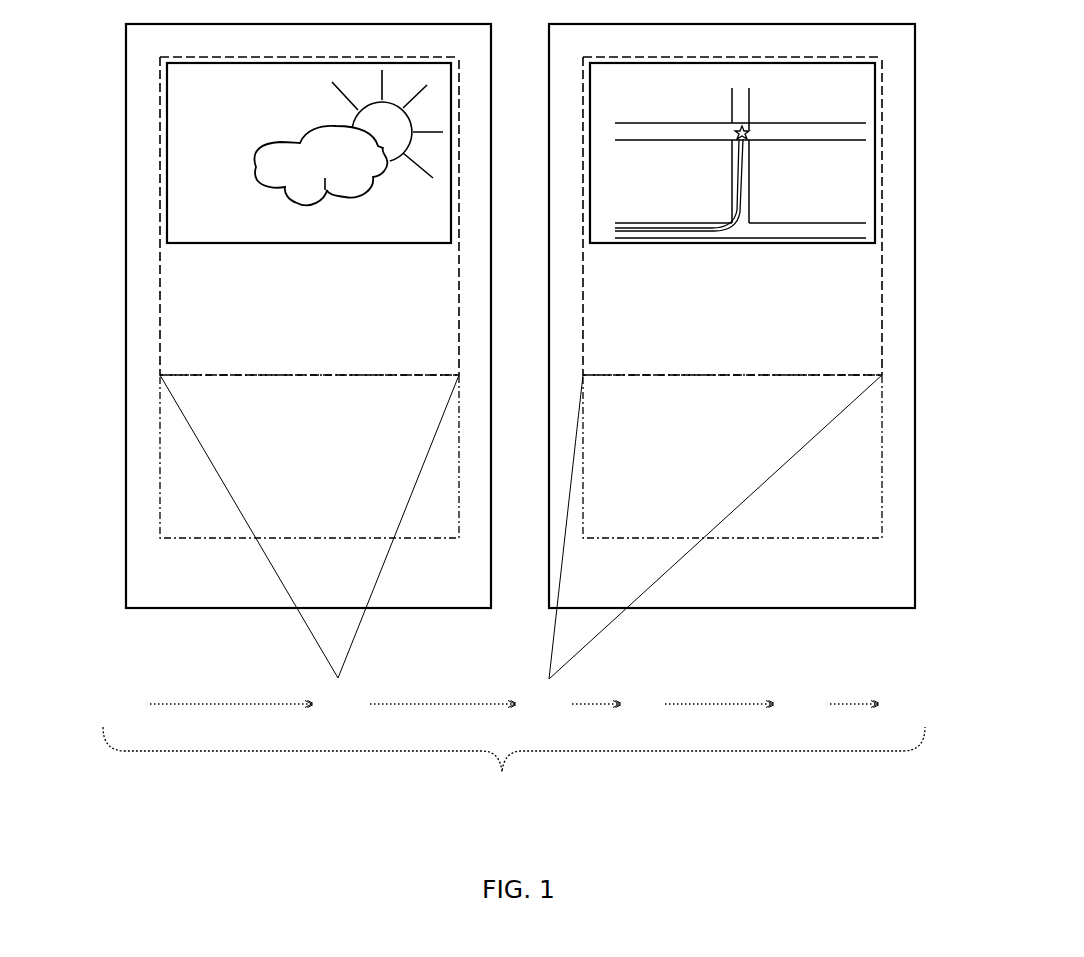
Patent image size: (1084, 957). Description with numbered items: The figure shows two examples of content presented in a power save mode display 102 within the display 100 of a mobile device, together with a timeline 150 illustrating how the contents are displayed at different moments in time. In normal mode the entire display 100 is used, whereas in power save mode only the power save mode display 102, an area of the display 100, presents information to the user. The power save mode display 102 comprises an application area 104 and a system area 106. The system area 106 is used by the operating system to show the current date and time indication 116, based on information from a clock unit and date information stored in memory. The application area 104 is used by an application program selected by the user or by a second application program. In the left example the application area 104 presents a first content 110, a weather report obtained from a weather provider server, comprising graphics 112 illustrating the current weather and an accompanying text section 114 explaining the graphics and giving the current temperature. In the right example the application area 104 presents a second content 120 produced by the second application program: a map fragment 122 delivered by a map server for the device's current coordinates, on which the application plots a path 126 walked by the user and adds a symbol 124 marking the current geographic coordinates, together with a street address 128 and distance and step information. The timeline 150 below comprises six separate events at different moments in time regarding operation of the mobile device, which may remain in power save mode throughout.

The display 100 is at (453, 606).
The power save mode display 102 is at (200, 55).
The application area 104 is at (160, 165).
The system area 106 is at (160, 448).
The first content 110 is at (340, 63).
The graphics 112 is at (253, 178).
The text section 114 is at (183, 98).
The date and time 116 is at (247, 481).
The map widget 120 is at (765, 63).
The map fragment 122 is at (858, 80).
The symbol 124 is at (750, 122).
The path 126 is at (748, 213).
The street address 128 is at (673, 290).
The timeline 150 is at (514, 751).